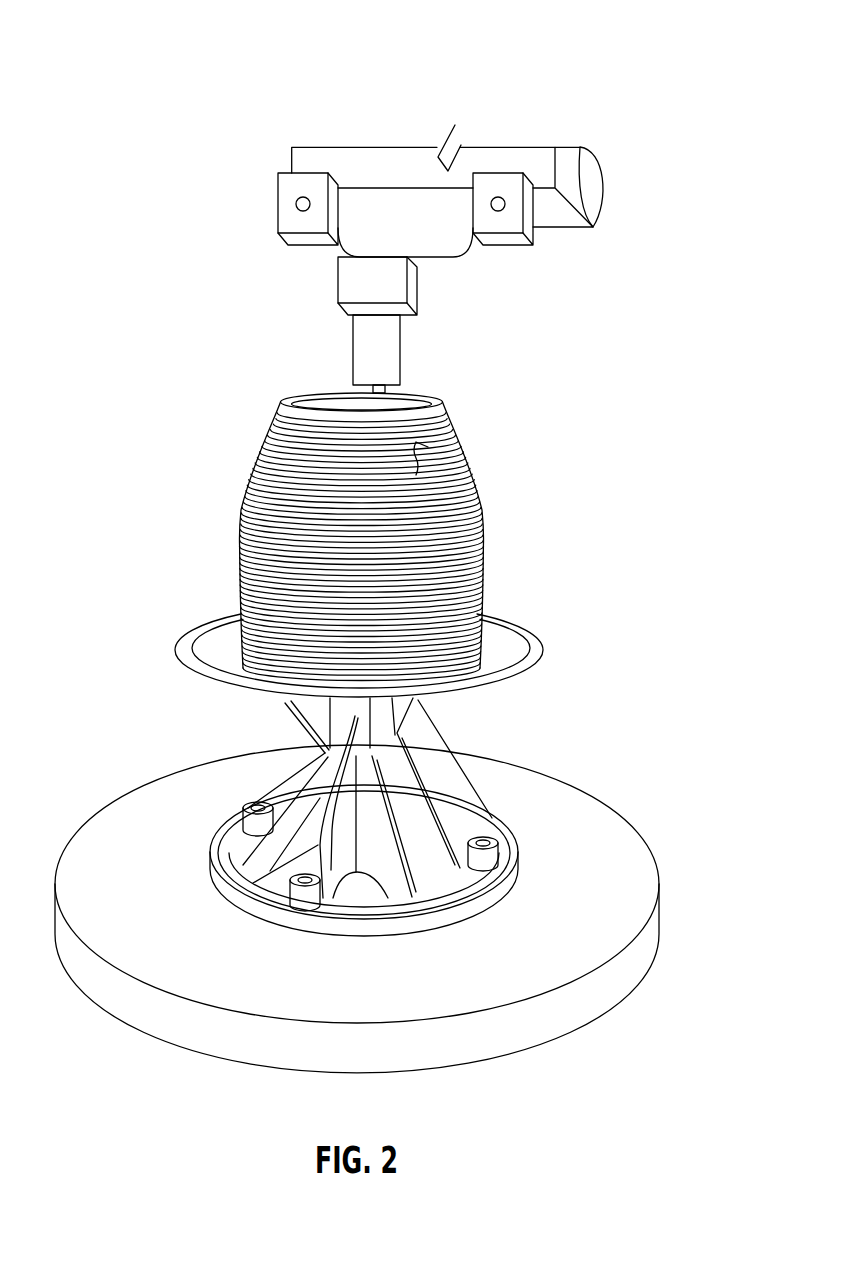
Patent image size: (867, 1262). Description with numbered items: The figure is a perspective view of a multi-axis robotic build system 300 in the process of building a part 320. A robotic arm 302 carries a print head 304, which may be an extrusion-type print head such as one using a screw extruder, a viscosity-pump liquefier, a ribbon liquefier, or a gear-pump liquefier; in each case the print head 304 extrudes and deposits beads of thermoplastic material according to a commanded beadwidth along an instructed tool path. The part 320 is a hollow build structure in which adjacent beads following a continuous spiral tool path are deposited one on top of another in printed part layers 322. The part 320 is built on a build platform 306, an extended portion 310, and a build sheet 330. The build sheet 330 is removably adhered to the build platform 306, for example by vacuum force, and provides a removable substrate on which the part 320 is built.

The multi-axis robotic build system 300 is at (140, 48).
The robotic arm 302 is at (487, 163).
The print head 304 is at (408, 362).
The build platform 306 is at (672, 890).
The extended portion 310 is at (415, 718).
The part 320 is at (478, 577).
The printed part layers 322 is at (460, 435).
The build sheet 330 is at (508, 633).